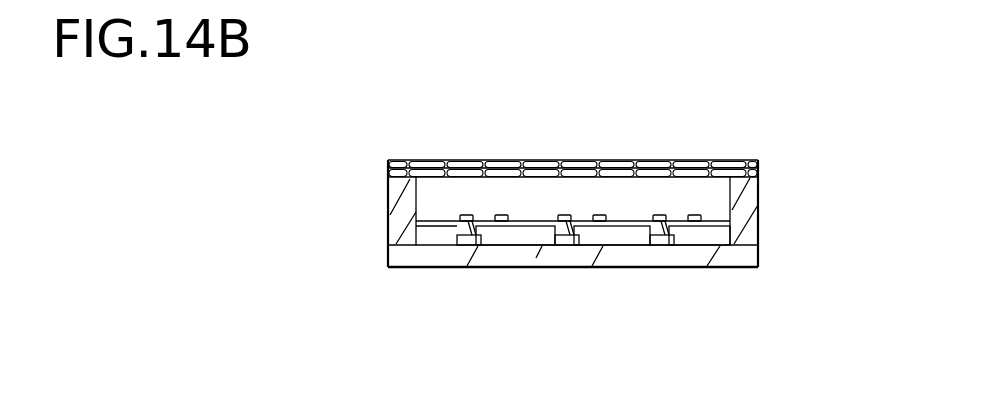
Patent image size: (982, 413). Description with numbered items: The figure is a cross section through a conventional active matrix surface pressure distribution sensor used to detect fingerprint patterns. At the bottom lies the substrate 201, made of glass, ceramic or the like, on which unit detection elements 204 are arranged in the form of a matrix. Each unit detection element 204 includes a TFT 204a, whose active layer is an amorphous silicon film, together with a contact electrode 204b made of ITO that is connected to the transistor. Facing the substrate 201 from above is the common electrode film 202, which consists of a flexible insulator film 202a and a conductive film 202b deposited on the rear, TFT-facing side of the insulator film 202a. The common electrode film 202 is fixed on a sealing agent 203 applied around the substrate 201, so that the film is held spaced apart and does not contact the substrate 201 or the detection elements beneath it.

The substrate 201 is at (496, 255).
The common electrode film 202 is at (580, 62).
The flexible insulator film 202a is at (442, 160).
The conductive film 202b is at (523, 160).
The sealing agent 203 is at (418, 246).
The unit detection element 204 is at (850, 328).
The TFT 204a is at (673, 246).
The contact electrode 204b is at (696, 222).